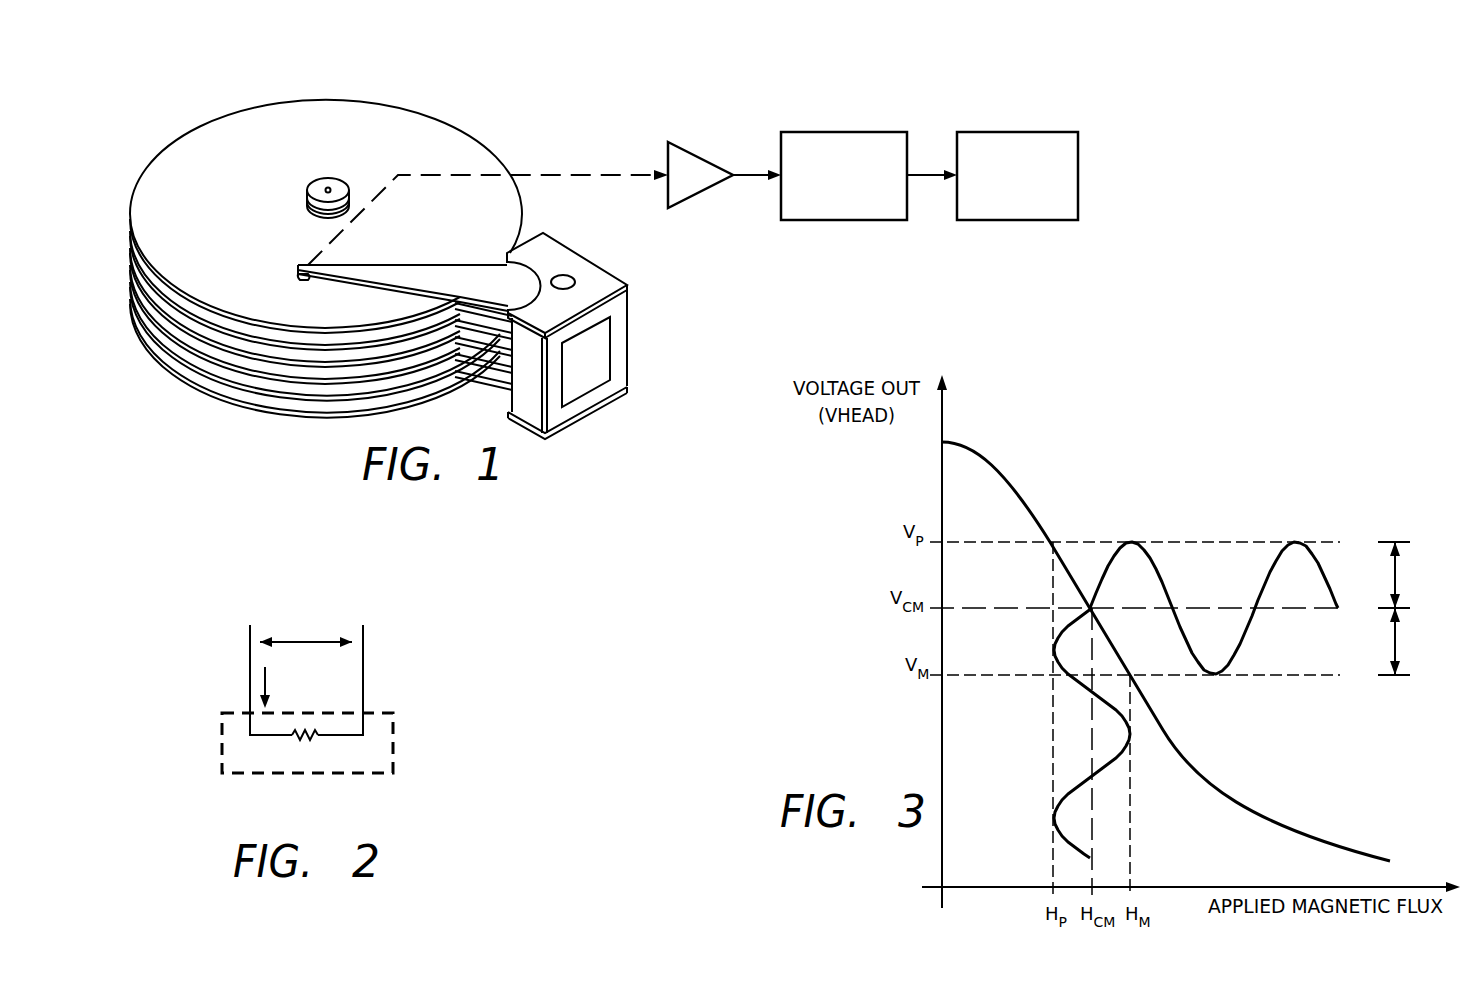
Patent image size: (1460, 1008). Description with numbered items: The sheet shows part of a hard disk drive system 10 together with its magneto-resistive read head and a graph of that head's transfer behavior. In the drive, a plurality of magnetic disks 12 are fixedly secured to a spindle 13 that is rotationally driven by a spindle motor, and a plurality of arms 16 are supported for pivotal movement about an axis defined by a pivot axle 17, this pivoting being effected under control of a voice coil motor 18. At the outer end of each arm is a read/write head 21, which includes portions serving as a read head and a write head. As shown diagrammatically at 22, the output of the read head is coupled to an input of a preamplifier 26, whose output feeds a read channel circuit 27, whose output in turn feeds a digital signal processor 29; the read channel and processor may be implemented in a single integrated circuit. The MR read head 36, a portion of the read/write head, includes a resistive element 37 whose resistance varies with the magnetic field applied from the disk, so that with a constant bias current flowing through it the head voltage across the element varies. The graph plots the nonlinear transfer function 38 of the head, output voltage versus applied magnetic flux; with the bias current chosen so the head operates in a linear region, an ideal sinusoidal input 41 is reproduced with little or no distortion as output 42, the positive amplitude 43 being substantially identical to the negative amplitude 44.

In FIG. 1, the hard disk drive system 10 is at (507, 91).
In FIG. 1, the magnetic disks 12 is at (227, 120).
In FIG. 1, the spindle 13 is at (322, 182).
In FIG. 1, the arms 16 is at (421, 273).
In FIG. 1, the pivot axle 17 is at (557, 278).
In FIG. 1, the voice coil motor 18 is at (600, 277).
In FIG. 1, the read/write head 21 is at (297, 277).
In FIG. 1, the coupling of read head output 22 is at (590, 173).
In FIG. 1, the preamplifier 26 is at (696, 200).
In FIG. 1, the read channel circuit 27 is at (847, 221).
In FIG. 1, the digital signal processor 29 is at (1017, 221).
In FIG. 2, the MR read head 36 is at (276, 774).
In FIG. 2, the resistive element 37 is at (311, 742).
In FIG. 3, the transfer function 38 is at (1018, 485).
In FIG. 3, the ideal sinusoidal input 41 is at (1062, 792).
In FIG. 3, the reproduced sinusoid output 42 is at (1170, 585).
In FIG. 3, the positive amplitude 43 is at (1395, 573).
In FIG. 3, the negative amplitude 44 is at (1395, 645).